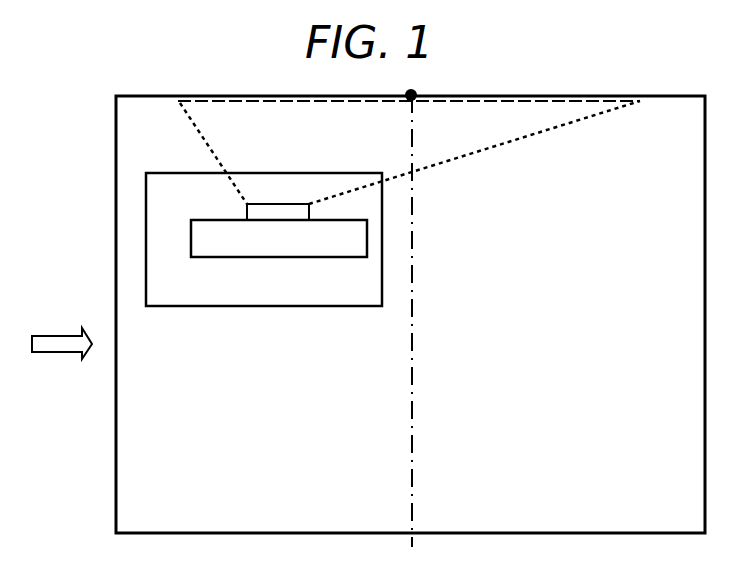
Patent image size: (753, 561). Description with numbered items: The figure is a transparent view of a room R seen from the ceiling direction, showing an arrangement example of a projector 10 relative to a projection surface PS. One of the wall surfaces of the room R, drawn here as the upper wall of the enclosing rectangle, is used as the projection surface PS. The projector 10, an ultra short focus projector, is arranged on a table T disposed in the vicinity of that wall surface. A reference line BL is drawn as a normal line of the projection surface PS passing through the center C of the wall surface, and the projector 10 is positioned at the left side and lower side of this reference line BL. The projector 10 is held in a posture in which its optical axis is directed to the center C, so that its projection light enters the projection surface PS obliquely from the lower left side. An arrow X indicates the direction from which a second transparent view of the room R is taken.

The room R is at (90, 189).
The projection surface PS is at (656, 100).
The center C is at (414, 100).
The reference line BL is at (413, 384).
The table T is at (225, 307).
The projector 10 is at (298, 258).
The arrow X is at (51, 344).